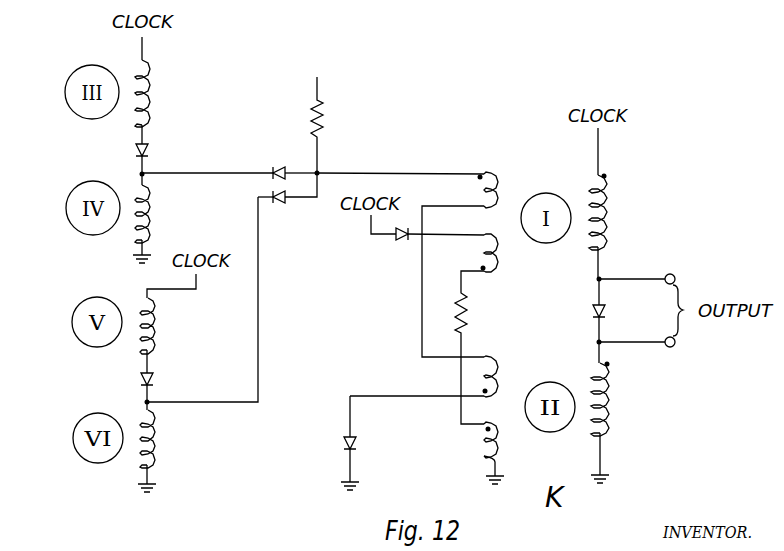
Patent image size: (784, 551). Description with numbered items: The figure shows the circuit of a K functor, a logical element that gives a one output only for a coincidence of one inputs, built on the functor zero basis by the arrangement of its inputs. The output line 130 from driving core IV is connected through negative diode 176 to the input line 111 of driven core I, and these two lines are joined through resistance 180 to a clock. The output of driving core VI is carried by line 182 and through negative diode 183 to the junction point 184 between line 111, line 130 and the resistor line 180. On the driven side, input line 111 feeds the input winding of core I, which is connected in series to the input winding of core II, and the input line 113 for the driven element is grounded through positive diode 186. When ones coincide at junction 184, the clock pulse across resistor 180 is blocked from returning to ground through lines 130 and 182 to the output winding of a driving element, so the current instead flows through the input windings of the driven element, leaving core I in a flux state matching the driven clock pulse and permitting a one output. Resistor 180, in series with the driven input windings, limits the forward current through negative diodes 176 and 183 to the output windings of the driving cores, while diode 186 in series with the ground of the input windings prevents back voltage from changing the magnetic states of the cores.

The output line 130 is at (211, 172).
The negative diode 176 is at (284, 167).
The junction point 184 is at (319, 166).
The resistance 180 is at (325, 112).
The negative diode 183 is at (276, 205).
The line 182 is at (262, 333).
The input terminal 111 is at (432, 170).
The input terminal 113 is at (412, 397).
The positive diode 186 is at (361, 442).